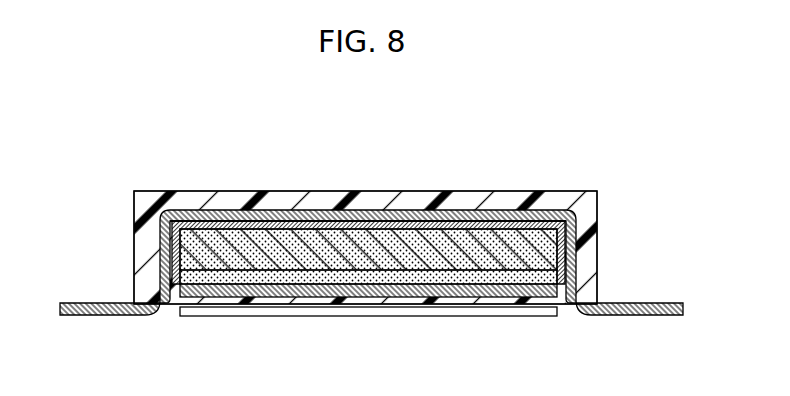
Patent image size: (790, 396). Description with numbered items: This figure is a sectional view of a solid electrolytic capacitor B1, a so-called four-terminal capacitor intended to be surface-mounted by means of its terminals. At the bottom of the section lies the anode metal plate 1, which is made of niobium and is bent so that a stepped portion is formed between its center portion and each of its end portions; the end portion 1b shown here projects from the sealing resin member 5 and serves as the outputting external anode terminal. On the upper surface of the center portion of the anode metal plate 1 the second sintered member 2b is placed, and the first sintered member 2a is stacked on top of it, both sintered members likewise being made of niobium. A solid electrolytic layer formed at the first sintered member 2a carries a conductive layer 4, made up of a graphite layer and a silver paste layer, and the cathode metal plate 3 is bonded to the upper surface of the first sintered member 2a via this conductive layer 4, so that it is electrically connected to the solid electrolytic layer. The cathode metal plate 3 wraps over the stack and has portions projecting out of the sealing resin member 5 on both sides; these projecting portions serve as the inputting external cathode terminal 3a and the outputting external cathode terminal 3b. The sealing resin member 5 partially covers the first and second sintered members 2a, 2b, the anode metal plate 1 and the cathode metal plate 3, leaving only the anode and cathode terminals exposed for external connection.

The solid electrolytic capacitor B1 is at (113, 140).
The anode metal plate 1 is at (303, 290).
The end portion 1b is at (226, 314).
The first sintered member 2a is at (466, 227).
The second sintered member 2b is at (412, 283).
The cathode metal plate 3 is at (383, 217).
The inputting external cathode terminal 3a is at (97, 316).
The outputting external cathode terminal 3b is at (642, 316).
The conductive layer 4 is at (292, 214).
The sealing resin member 5 is at (215, 200).